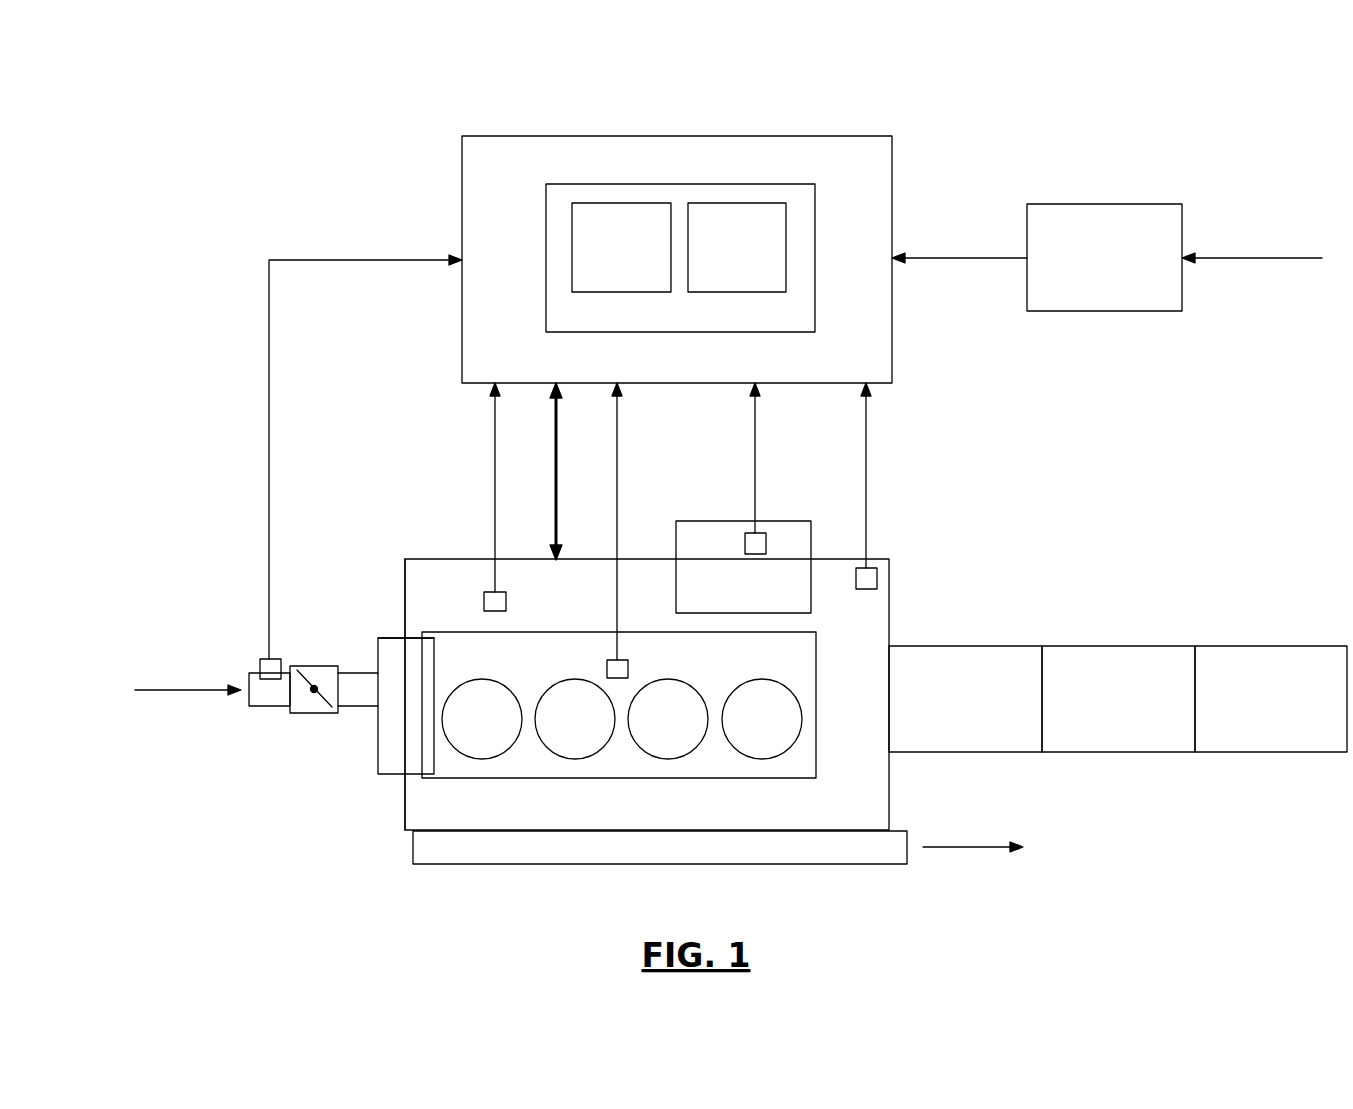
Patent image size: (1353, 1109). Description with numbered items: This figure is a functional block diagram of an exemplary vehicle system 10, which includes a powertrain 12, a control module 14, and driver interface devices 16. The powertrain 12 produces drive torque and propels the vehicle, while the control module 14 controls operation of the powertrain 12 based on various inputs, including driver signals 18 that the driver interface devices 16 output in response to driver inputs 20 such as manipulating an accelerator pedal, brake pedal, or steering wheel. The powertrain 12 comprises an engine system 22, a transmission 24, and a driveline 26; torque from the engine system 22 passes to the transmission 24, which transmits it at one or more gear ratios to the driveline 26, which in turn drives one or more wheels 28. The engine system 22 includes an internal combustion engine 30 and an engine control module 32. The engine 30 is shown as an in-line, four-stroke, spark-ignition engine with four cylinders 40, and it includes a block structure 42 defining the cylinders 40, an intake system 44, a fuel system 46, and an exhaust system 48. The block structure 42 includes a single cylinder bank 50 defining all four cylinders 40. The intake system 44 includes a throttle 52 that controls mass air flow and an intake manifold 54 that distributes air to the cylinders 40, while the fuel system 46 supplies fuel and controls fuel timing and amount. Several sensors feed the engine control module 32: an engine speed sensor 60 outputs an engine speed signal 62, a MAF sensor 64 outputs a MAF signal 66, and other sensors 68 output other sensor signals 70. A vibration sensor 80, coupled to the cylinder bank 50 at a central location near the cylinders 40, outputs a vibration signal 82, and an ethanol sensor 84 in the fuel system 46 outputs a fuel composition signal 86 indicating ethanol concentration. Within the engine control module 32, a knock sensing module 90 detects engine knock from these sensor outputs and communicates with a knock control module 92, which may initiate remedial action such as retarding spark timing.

The vehicle system 10 is at (142, 124).
The powertrain 12 is at (1113, 492).
The control module 14 is at (462, 206).
The driver interface devices 16 is at (1027, 228).
The driver signals 18 is at (955, 258).
The driver inputs 20 is at (1260, 258).
The engine system 22 is at (344, 210).
The transmission 24 is at (960, 646).
The driveline 26 is at (1114, 646).
The wheels 28 is at (1267, 646).
The internal combustion engine 30 is at (425, 559).
The engine control module 32 is at (546, 218).
The cylinders 40 is at (480, 680).
The block structure 42 is at (405, 606).
The intake system 44 is at (378, 645).
The fuel system 46 is at (695, 521).
The exhaust system 48 is at (660, 865).
The cylinder bank 50 is at (558, 632).
The throttle 52 is at (315, 666).
The intake manifold 54 is at (378, 762).
The engine speed sensor 60 is at (866, 590).
The engine speed signal 62 is at (866, 520).
The MAF sensor 64 is at (260, 663).
The MAF signal 66 is at (269, 604).
The other sensors 68 is at (484, 602).
The other sensor signals 70 is at (495, 528).
The vibration sensor 80 is at (607, 668).
The vibration signal 82 is at (617, 528).
The ethanol sensor 84 is at (745, 543).
The fuel composition signal 86 is at (755, 483).
The knock sensing module 90 is at (613, 203).
The knock control module 92 is at (728, 203).